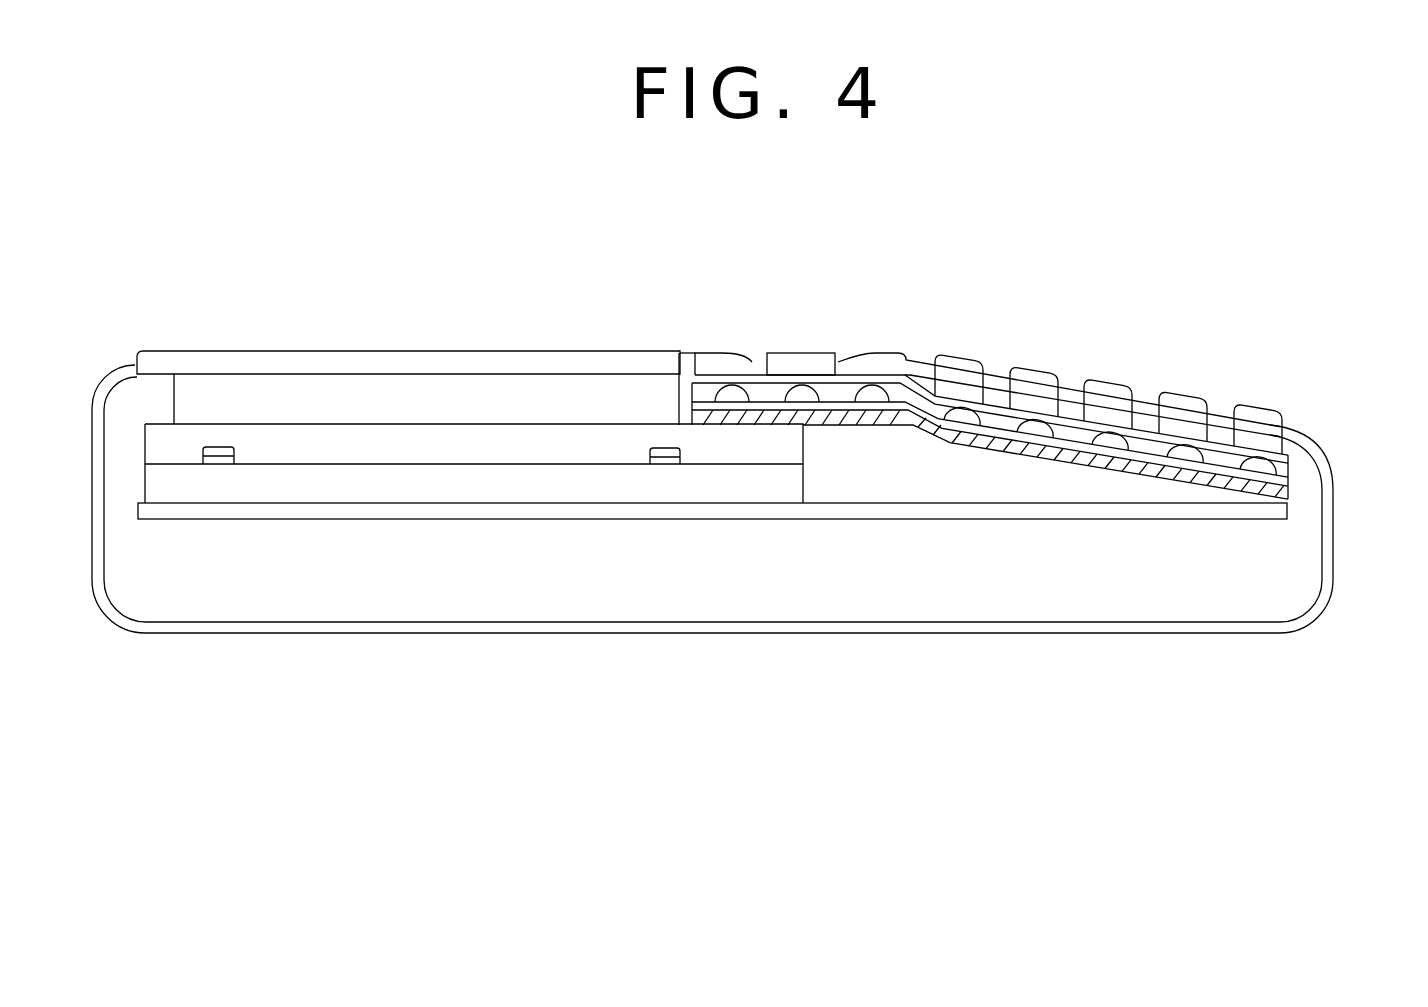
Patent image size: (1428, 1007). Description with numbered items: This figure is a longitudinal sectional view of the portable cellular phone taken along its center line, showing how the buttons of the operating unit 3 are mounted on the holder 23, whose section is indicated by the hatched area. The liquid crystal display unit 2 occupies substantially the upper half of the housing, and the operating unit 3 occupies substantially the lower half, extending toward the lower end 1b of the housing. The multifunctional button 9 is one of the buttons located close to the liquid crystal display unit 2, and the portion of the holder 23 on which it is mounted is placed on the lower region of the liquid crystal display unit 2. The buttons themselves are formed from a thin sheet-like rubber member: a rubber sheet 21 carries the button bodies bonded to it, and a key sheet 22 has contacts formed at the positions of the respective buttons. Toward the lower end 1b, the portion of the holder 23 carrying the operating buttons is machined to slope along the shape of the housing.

The lower end of the housing 1b is at (1335, 553).
The liquid crystal display unit 2 is at (465, 348).
The operating unit 3 is at (1048, 455).
The multifunctional button 9 is at (806, 352).
The rubber sheet 21 is at (1297, 435).
The key sheet 22 is at (1290, 478).
The holder 23 is at (1101, 470).